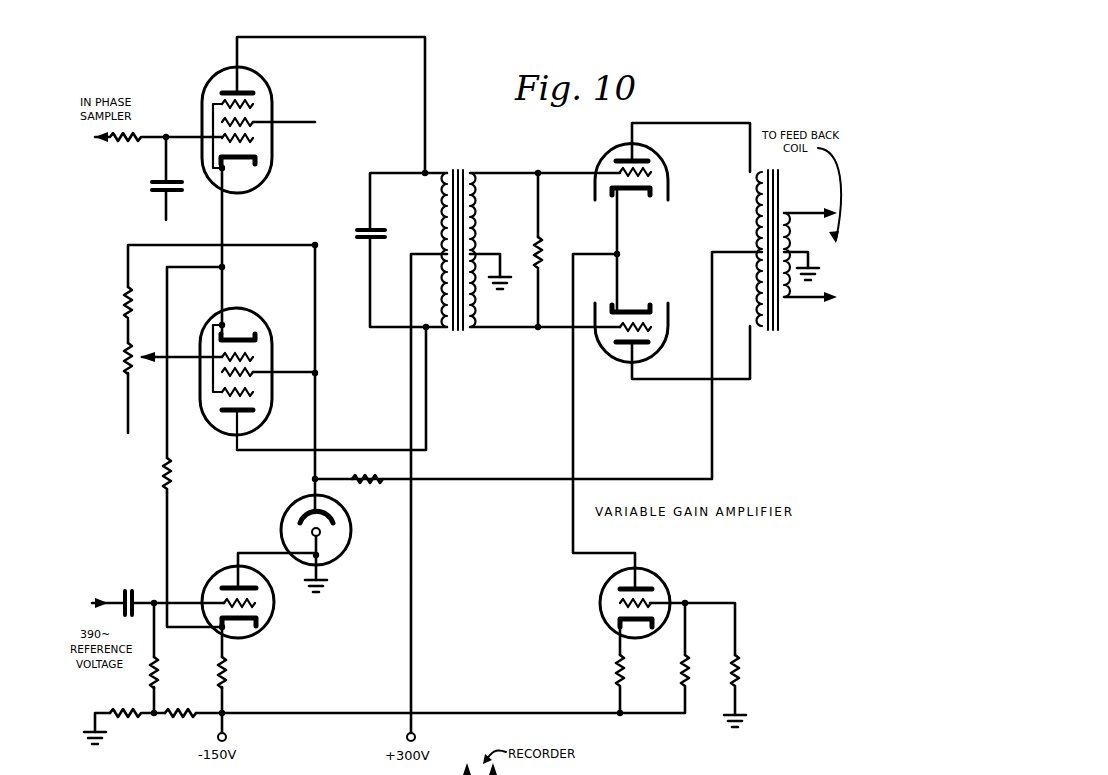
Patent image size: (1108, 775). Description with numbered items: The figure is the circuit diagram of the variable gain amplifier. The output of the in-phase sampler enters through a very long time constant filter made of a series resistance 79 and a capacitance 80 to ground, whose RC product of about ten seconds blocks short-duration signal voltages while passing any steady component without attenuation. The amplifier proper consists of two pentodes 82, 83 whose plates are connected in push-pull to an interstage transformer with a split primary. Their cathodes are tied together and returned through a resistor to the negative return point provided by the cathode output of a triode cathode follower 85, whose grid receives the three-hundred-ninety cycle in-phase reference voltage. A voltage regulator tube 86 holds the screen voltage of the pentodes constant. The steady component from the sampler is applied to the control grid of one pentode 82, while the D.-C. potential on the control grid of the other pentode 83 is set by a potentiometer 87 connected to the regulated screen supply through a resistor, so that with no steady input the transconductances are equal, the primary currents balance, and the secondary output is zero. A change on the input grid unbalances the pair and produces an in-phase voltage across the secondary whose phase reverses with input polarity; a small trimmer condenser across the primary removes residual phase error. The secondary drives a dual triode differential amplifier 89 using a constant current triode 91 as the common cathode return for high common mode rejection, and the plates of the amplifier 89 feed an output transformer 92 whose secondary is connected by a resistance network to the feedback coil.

The series resistance 79 is at (136, 144).
The capacitance 80 is at (150, 188).
The pentode 82 is at (262, 72).
The pentode 83 is at (264, 312).
The triode cathode follower 85 is at (224, 568).
The voltage regulator tube 86 is at (350, 558).
The potentiometer 87 is at (124, 360).
The dual triode differential amplifier 89 is at (600, 150).
The constant current triode 91 is at (662, 578).
The output transformer 92 is at (772, 178).